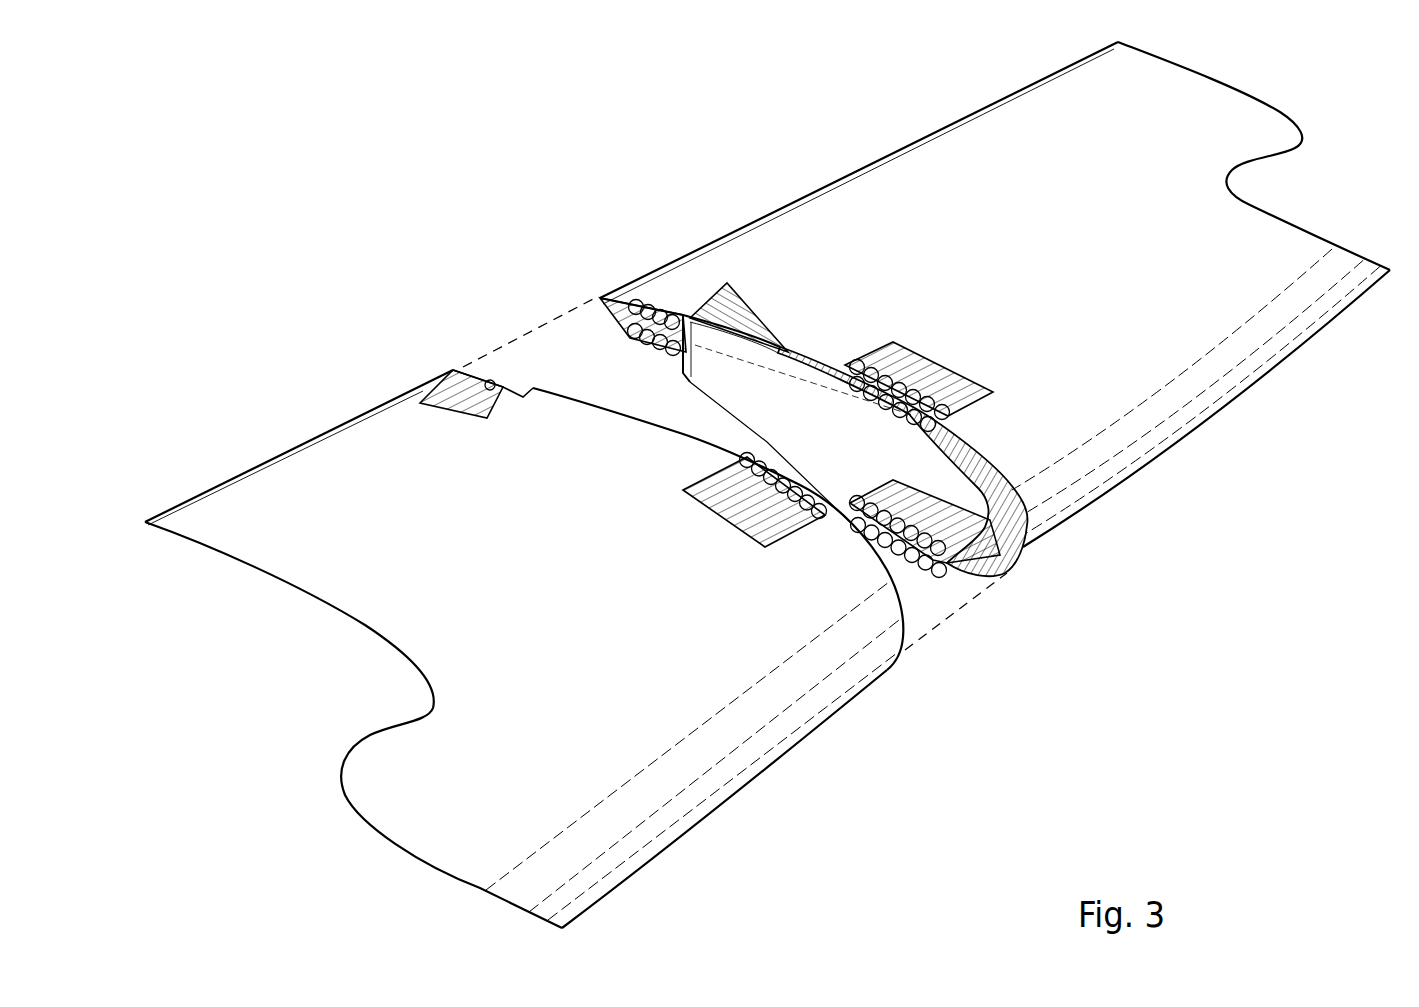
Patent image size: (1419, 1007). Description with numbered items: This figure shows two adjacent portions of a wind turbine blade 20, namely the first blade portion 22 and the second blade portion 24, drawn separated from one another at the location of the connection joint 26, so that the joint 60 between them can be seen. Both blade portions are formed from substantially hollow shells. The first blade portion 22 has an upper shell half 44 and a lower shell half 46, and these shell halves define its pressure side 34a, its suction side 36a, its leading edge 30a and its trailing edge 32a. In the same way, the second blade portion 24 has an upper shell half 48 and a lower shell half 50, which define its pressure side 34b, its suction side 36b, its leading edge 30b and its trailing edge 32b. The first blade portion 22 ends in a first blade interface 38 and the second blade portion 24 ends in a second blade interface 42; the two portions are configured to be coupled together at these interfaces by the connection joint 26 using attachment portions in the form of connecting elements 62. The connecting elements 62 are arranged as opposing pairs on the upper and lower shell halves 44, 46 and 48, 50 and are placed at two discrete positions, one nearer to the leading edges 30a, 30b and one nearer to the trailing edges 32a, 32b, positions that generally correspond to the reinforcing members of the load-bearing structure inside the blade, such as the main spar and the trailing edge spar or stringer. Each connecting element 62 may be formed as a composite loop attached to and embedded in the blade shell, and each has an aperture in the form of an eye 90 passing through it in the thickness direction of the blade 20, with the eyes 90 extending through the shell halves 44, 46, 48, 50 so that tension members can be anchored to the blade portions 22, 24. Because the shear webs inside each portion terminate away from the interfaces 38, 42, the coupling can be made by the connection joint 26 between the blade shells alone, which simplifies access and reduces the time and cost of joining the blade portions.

The blade 20 is at (768, 485).
The first blade portion 22 is at (524, 609).
The second blade portion 24 is at (996, 294).
The connection joint 26 is at (965, 633).
The leading edge 30a is at (752, 786).
The leading edge 30b is at (1190, 412).
The trailing edge 32a is at (270, 458).
The trailing edge 32b is at (866, 160).
The pressure side 34a is at (560, 779).
The pressure side 34b is at (1237, 141).
The suction side 36a is at (700, 822).
The suction side 36b is at (1335, 332).
The first blade interface 38 is at (550, 388).
The second blade interface 42 is at (750, 333).
The upper shell half 44 is at (524, 609).
The lower shell half 46 is at (840, 725).
The upper shell half 48 is at (996, 294).
The lower shell half 50 is at (1008, 560).
The joint 60 is at (741, 394).
The connecting elements 62 is at (445, 385).
The eyes 90 is at (490, 383).